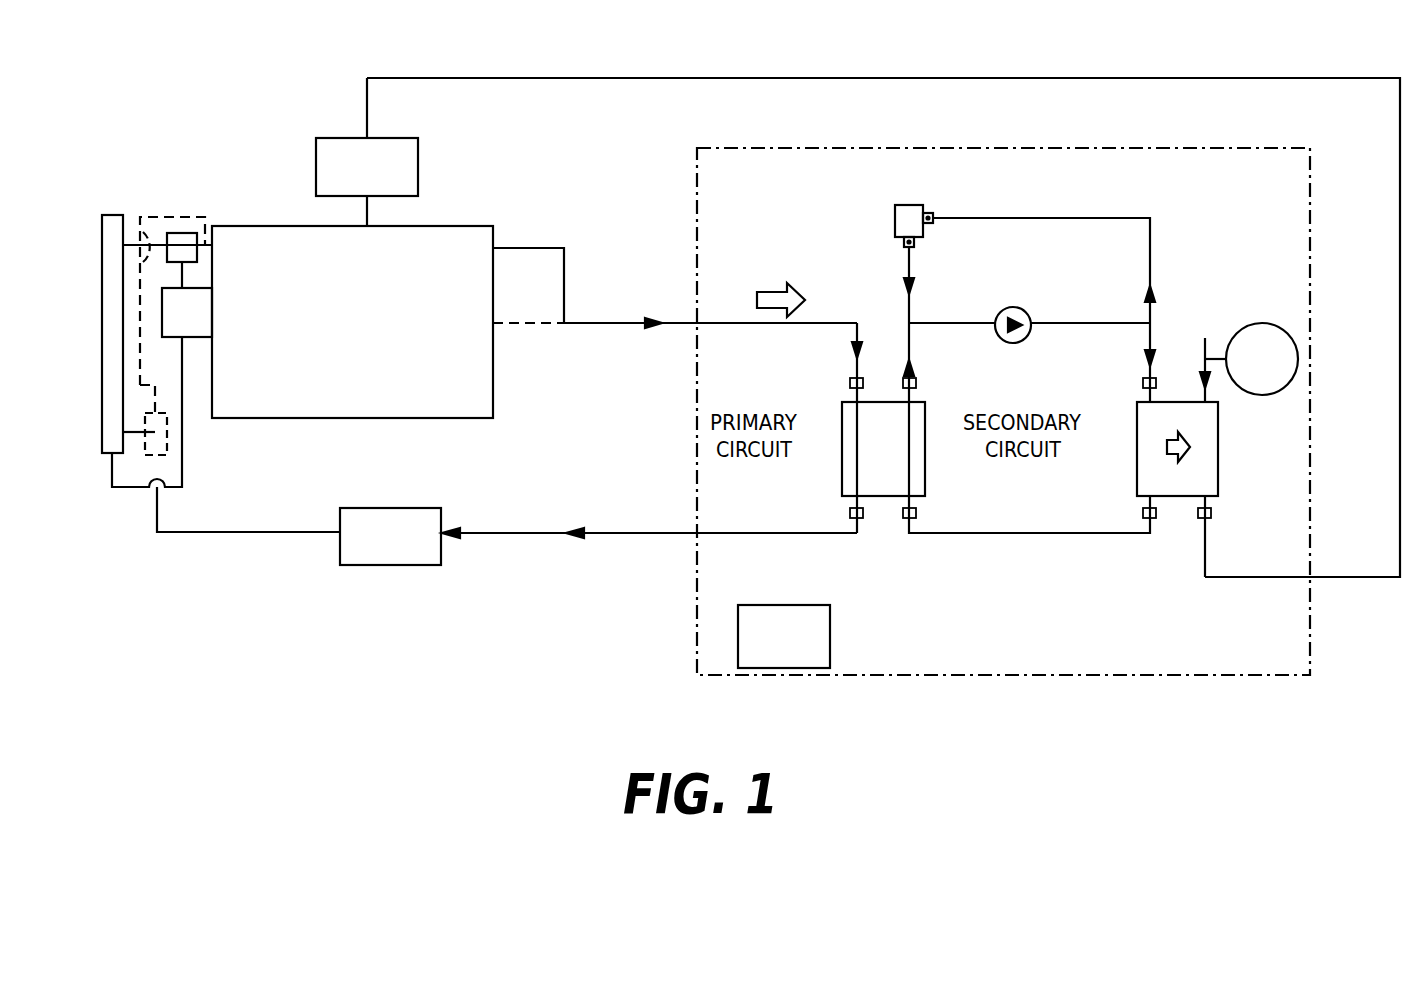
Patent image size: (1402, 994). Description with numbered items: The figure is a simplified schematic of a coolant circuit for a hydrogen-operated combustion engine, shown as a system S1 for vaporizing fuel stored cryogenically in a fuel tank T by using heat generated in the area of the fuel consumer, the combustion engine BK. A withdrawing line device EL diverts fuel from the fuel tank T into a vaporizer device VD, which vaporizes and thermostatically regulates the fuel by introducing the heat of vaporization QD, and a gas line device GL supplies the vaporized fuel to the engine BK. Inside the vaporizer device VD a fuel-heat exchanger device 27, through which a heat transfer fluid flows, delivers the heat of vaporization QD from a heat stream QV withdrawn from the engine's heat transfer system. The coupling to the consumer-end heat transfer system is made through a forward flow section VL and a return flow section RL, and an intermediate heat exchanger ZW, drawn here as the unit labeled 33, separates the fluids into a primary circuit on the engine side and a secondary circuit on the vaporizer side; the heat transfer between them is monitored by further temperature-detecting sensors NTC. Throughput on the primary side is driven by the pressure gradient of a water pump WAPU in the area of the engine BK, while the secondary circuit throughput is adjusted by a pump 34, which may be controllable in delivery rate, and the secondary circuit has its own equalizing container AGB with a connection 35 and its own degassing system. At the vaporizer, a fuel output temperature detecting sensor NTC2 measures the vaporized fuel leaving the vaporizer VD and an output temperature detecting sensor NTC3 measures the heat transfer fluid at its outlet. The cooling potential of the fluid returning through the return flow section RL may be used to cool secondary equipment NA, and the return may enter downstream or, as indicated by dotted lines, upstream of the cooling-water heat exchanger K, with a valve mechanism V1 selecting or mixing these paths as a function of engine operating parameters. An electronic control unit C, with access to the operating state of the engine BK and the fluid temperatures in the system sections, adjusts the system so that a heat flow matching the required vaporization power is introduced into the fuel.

The cooling-water heat exchanger K is at (110, 312).
The valve mechanism V1 is at (160, 445).
The water pump WAPU is at (198, 310).
The combustion engine BK is at (451, 250).
The forward flow section VL is at (675, 288).
The return flow section RL is at (649, 521).
The secondary equipment NA is at (389, 520).
The system S1 is at (1238, 178).
The heat stream QV is at (773, 298).
The equalizing container AGB is at (1015, 290).
The expansion tank connection 35 is at (893, 222).
The pump 34 is at (1020, 320).
The temperature-detecting sensors NTC is at (849, 383).
The primary heat exchanger 33 is at (883, 449).
The intermediate heat exchanger ZW is at (920, 478).
The fuel-heat exchanger device 27 is at (1213, 483).
The heat of vaporization QD is at (1190, 442).
The withdrawing line device EL is at (1205, 358).
The fuel tank T is at (1251, 359).
The vaporizer device VD is at (1118, 486).
The output temperature detecting sensor NTC3 is at (1150, 519).
The fuel output temperature detecting sensor NTC2 is at (1212, 519).
The gas line device GL is at (1242, 580).
The electronic control unit C is at (784, 636).